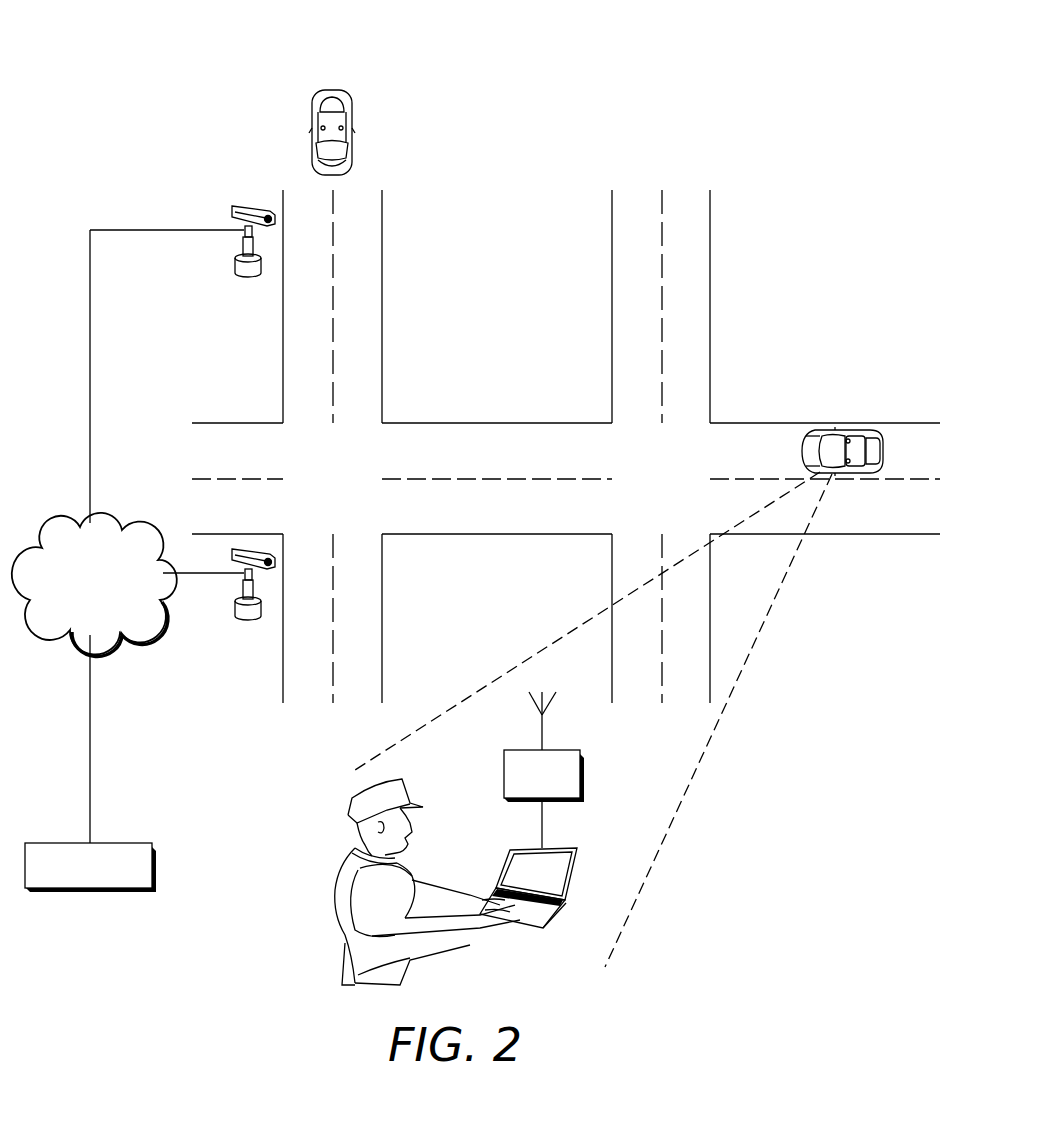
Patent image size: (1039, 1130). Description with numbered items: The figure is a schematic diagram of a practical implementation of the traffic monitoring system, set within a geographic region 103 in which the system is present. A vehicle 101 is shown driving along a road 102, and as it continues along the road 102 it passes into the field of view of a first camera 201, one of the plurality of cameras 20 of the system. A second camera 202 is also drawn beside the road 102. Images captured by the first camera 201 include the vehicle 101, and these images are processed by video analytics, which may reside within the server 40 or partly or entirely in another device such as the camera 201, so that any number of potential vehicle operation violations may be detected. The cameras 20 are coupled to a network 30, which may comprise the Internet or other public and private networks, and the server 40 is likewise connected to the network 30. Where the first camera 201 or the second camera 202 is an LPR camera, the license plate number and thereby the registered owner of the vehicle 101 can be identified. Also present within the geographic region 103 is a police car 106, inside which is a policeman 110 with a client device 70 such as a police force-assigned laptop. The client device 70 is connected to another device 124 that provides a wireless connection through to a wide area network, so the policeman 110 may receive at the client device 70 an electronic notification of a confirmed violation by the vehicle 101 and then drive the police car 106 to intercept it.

The geographic region 103 is at (56, 32).
The vehicle 101 is at (353, 122).
The road 102 is at (362, 281).
The police car 106 is at (845, 428).
The network 30 is at (79, 612).
The server 40 is at (122, 843).
The cameras 20 is at (224, 436).
The first camera 201 is at (235, 264).
The second camera 202 is at (250, 620).
The another device 124 is at (583, 773).
The client device 70 is at (566, 850).
The policeman 110 is at (337, 876).